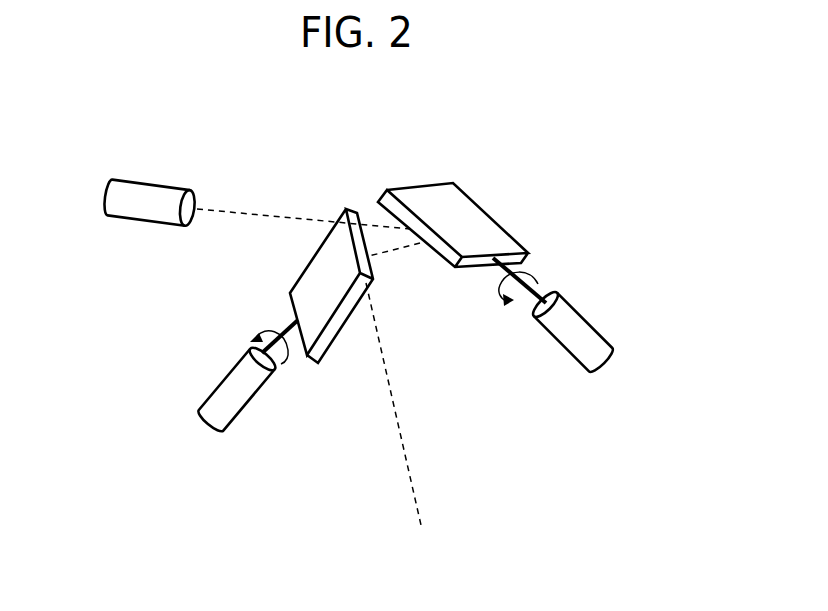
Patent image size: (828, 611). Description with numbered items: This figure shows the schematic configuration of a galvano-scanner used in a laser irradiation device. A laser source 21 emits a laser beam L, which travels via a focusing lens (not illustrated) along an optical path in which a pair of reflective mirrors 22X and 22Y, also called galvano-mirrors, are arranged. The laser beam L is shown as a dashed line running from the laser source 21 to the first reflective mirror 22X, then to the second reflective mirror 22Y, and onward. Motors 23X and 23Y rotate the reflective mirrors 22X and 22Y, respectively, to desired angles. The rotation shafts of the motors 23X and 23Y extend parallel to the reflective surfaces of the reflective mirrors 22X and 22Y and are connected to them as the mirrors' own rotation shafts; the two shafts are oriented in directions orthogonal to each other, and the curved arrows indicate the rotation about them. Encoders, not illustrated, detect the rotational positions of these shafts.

The laser source 21 is at (150, 194).
The laser beam L is at (247, 213).
The reflective mirror 22X is at (472, 223).
The reflective mirror 22Y is at (317, 272).
The motor 23X is at (580, 333).
The motor 23Y is at (225, 385).